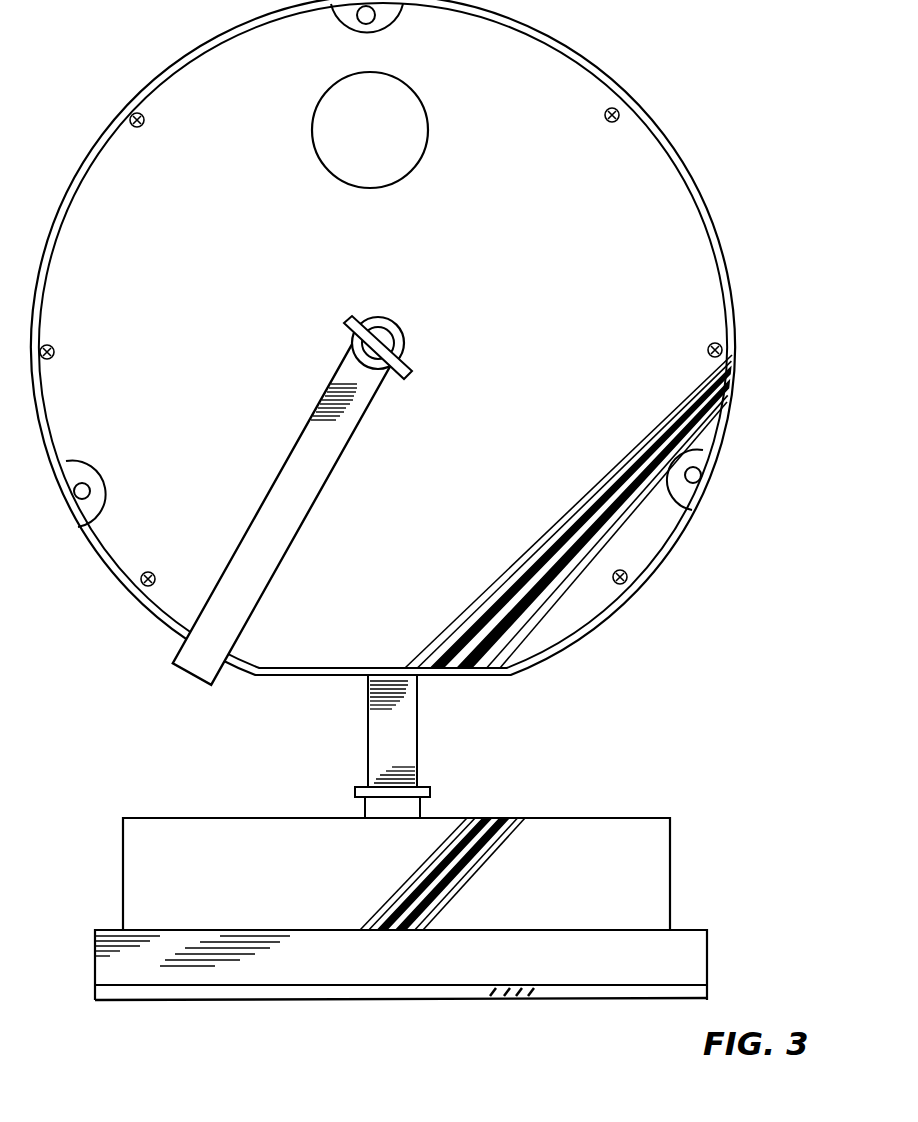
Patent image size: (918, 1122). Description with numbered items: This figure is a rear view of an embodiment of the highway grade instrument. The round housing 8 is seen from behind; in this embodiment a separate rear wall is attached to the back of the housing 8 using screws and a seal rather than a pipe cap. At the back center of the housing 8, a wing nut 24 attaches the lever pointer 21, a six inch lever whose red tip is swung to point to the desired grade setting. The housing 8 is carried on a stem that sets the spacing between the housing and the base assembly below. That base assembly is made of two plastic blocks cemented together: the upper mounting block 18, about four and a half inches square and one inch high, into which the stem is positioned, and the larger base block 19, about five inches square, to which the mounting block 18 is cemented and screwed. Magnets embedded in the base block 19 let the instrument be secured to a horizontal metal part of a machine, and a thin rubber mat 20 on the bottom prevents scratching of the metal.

The housing 8 is at (596, 66).
The mounting block 18 is at (655, 876).
The base block 19 is at (694, 956).
The rubber mat 20 is at (322, 992).
The lever pointer 21 is at (191, 686).
The wing nut 24 is at (410, 373).